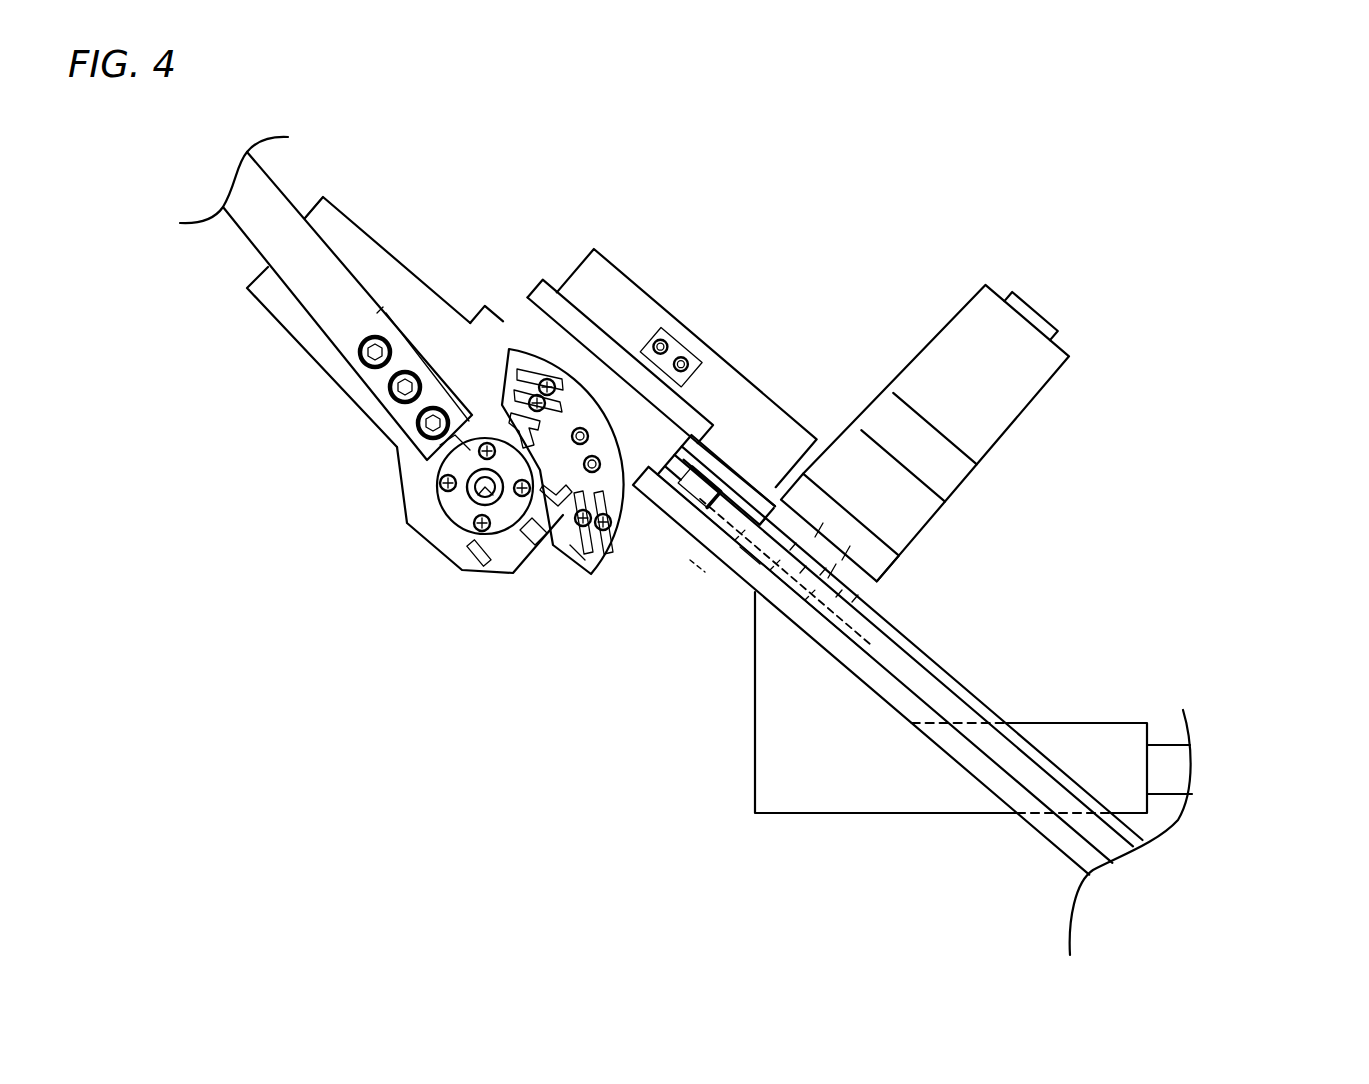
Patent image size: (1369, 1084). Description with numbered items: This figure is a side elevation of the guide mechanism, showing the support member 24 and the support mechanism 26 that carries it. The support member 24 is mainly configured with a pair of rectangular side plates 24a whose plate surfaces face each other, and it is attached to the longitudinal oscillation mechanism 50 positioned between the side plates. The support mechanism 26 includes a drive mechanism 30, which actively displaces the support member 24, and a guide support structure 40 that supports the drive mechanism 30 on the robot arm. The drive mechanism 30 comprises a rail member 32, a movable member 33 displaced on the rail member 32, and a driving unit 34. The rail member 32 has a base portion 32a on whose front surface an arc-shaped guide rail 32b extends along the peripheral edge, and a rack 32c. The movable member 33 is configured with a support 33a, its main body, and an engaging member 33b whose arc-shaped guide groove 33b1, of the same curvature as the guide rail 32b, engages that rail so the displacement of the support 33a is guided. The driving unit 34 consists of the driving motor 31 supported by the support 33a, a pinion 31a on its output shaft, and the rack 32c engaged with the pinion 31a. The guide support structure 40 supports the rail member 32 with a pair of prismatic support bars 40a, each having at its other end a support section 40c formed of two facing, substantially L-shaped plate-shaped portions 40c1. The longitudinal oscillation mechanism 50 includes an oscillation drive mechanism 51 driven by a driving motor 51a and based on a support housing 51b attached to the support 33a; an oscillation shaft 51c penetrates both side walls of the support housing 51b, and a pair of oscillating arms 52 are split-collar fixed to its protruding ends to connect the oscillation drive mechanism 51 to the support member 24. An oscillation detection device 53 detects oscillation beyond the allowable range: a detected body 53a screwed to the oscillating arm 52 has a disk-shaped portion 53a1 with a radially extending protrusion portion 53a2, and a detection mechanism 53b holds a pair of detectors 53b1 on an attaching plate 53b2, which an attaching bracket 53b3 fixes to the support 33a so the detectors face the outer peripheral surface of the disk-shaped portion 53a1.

The support member 24 is at (293, 197).
The side plate 24a is at (278, 252).
The support mechanism 26 is at (1252, 215).
The drive mechanism 30 is at (857, 292).
The driving motor 31 is at (993, 307).
The pinion 31a is at (863, 637).
The rail member 32 is at (707, 553).
The base portion 32a is at (740, 547).
The guide rail 32b is at (690, 490).
The rack 32c is at (705, 562).
The movable member 33 is at (767, 460).
The support 33a is at (888, 585).
The engaging member 33b is at (738, 490).
The guide groove 33b1 is at (683, 470).
The driving unit 34 is at (913, 592).
The guide support structure 40 is at (748, 825).
The support bar 40a is at (1163, 778).
The support section 40c is at (1052, 707).
The plate-shaped portion 40c1 is at (895, 800).
The longitudinal oscillation mechanism 50 is at (365, 660).
The oscillation drive mechanism 51 is at (515, 312).
The driving motor 51a is at (343, 243).
The support housing 51b is at (492, 353).
The oscillation shaft 51c is at (470, 473).
The oscillating arm 52 is at (390, 420).
The oscillation detection device 53 is at (442, 528).
The detected body 53a is at (432, 463).
The disk-shaped portion 53a1 is at (460, 510).
The protrusion portion 53a2 is at (480, 560).
The detection mechanism 53b is at (548, 560).
The detector 53b1 is at (512, 418).
The attaching plate 53b2 is at (593, 565).
The attaching bracket 53b3 is at (620, 395).